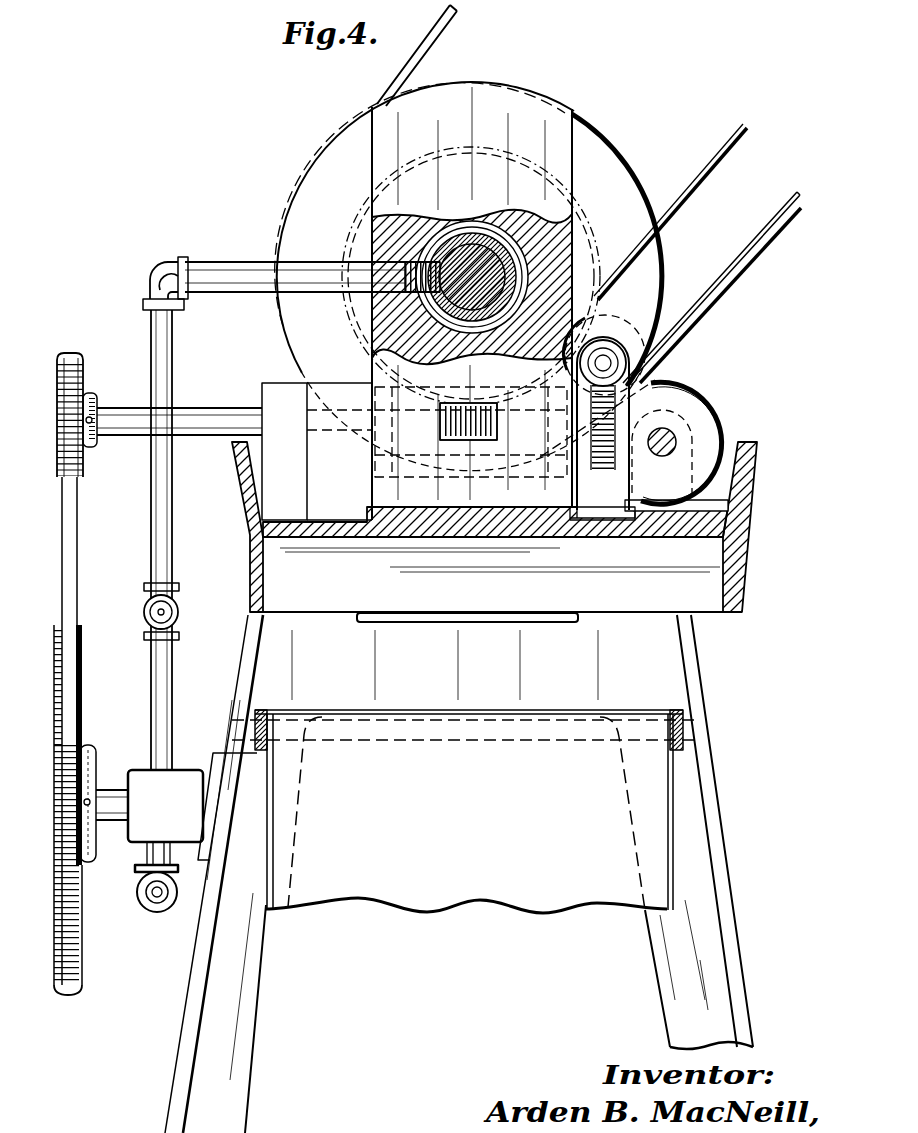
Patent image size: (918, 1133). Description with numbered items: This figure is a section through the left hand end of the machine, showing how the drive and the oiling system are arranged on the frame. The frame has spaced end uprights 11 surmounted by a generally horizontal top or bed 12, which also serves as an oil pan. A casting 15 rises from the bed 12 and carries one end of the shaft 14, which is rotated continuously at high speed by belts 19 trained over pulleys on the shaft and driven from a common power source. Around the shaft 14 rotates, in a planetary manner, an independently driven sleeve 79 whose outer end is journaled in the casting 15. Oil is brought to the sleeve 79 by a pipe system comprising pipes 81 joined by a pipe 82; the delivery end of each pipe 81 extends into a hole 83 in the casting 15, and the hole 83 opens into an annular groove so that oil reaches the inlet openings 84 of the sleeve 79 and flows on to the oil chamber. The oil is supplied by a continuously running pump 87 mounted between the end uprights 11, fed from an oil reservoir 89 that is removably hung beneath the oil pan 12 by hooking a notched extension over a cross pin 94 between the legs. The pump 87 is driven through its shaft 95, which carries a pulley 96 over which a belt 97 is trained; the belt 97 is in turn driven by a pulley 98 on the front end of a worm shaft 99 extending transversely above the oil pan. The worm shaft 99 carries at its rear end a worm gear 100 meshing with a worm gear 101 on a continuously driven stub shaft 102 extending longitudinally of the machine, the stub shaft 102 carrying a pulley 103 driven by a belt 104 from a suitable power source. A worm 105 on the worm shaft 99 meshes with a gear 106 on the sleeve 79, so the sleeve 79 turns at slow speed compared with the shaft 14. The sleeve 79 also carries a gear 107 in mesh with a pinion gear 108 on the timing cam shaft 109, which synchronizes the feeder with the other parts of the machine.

The end uprights 11 is at (198, 972).
The top or bed 12 is at (735, 549).
The shaft 14 is at (455, 262).
The casting 15 is at (560, 164).
The belts 19 is at (396, 79).
The sleeves 79 is at (472, 232).
The pipes 81 is at (231, 276).
The pipe 82 is at (147, 902).
The holes 83 is at (365, 292).
The inlet openings 84 is at (437, 268).
The pump 87 is at (185, 780).
The oil reservoir 89 is at (270, 898).
The cross pin 94 is at (690, 736).
The shaft 95 is at (108, 792).
The pulley 96 is at (84, 650).
The belt 97 is at (75, 563).
The pulley 98 is at (85, 379).
The worm shaft 99 is at (215, 418).
The worm gear 100 is at (670, 383).
The worm gear 101 is at (660, 328).
The stub shaft 102 is at (622, 330).
The pulley 103 is at (606, 305).
The belt 104 is at (701, 182).
The worm 105 is at (472, 470).
The gear 106 is at (370, 342).
The gear 107 is at (608, 166).
The pinion gear 108 is at (720, 412).
The timing cam shaft 109 is at (677, 442).